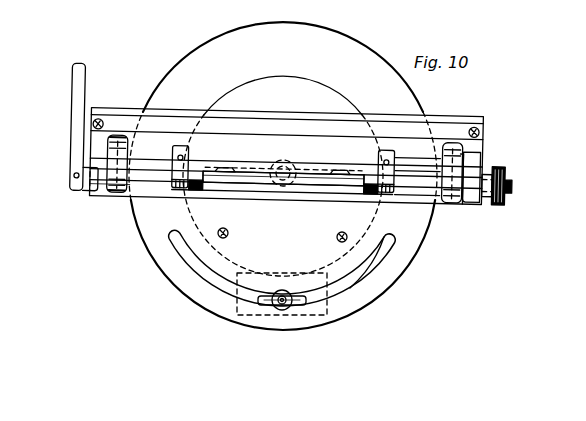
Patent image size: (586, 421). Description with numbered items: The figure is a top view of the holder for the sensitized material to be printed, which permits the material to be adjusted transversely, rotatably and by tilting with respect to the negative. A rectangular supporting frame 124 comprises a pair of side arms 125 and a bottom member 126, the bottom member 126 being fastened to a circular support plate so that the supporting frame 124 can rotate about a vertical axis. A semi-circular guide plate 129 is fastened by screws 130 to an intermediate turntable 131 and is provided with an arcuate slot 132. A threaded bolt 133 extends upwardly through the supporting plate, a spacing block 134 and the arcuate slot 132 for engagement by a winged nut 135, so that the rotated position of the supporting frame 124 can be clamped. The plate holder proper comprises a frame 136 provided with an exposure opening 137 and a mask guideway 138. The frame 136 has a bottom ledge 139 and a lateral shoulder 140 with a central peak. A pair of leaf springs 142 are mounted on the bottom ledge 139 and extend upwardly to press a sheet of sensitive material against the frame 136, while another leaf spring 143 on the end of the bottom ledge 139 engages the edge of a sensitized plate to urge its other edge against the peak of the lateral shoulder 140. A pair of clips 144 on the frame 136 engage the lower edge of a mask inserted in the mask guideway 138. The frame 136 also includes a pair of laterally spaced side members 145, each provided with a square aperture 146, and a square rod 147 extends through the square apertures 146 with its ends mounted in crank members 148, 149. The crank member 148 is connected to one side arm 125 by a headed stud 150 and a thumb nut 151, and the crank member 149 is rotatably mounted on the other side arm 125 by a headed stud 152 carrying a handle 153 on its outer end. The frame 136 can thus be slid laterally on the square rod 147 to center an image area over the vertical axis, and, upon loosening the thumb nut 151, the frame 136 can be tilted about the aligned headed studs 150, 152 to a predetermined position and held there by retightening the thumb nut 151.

The rectangular supporting frame 124 is at (150, 254).
The side arms 125 is at (96, 196).
The bottom member 126 is at (104, 108).
The semi-circular guide plate 129 is at (181, 268).
The screws 130 is at (228, 237).
The intermediate turntable 131 is at (318, 88).
The arcuate slot 132 is at (376, 260).
The threaded bolt 133 is at (293, 306).
The spacing block 134 is at (240, 312).
The winged nut 135 is at (274, 306).
The frame 136 is at (372, 157).
The exposure opening 137 is at (245, 170).
The mask guideway 138 is at (288, 160).
The bottom ledge 139 is at (287, 186).
The lateral shoulder 140 is at (183, 190).
The leaf springs 142 is at (206, 192).
The leaf spring 143 is at (425, 198).
The clips 144 is at (232, 170).
The side members 145 is at (181, 146).
The square apertures 146 is at (175, 178).
The square rod 147 is at (413, 163).
The crank member 148 is at (462, 150).
The crank member 149 is at (118, 135).
The headed stud 150 is at (455, 200).
The thumb nut 151 is at (510, 180).
The headed stud 152 is at (118, 197).
The handle 153 is at (71, 73).